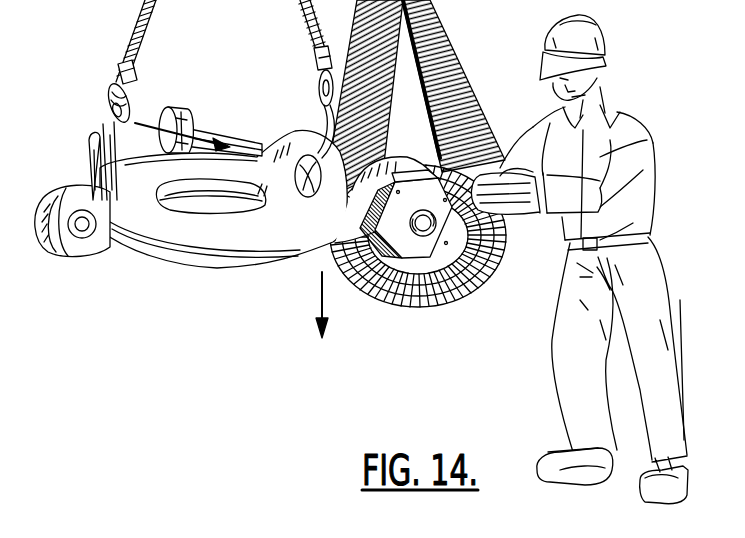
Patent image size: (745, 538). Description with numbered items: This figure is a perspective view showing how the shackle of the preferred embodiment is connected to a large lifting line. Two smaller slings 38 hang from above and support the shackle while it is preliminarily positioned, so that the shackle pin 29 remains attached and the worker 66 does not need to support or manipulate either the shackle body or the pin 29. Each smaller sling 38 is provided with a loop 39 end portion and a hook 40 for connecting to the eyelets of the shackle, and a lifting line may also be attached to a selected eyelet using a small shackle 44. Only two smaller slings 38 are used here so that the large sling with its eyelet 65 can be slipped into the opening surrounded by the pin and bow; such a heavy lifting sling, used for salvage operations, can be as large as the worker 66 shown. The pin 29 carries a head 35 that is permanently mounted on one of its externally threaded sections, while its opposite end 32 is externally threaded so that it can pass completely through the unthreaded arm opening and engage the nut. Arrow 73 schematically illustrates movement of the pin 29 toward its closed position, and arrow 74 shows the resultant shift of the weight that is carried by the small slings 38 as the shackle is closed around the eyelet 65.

The shackle pin 29 is at (226, 135).
The end of pin 32 is at (318, 200).
The head 35 is at (182, 106).
The smaller slings 38 is at (143, 22).
The loop end portions 39 is at (132, 96).
The hooks 40 is at (96, 135).
The small shackle 44 is at (76, 183).
The eyelet of sling 65 is at (441, 56).
The worker 66 is at (637, 160).
The arrow 73 is at (190, 119).
The arrow 74 is at (322, 298).